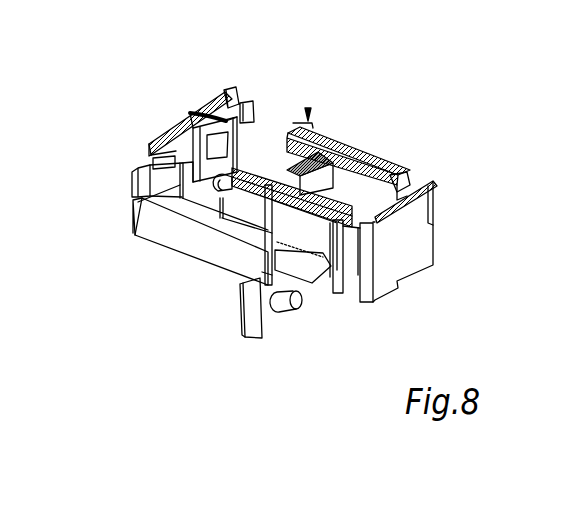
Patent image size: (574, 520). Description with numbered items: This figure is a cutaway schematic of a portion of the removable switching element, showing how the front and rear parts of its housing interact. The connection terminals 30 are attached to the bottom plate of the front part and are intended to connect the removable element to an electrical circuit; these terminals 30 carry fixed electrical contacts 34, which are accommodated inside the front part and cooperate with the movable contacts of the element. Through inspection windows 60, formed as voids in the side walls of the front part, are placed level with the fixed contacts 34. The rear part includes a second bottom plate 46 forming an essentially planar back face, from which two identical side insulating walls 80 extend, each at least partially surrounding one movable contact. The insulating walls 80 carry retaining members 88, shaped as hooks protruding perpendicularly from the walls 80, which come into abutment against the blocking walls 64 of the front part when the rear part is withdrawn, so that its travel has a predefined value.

The connection terminals 30 is at (270, 320).
The fixed electrical contacts 34 is at (208, 110).
The second bottom plate 46 is at (412, 245).
The inspection windows 60 is at (140, 200).
The blocking walls 64 is at (217, 202).
The side insulating walls 80 is at (293, 228).
The retaining members 88 is at (192, 182).